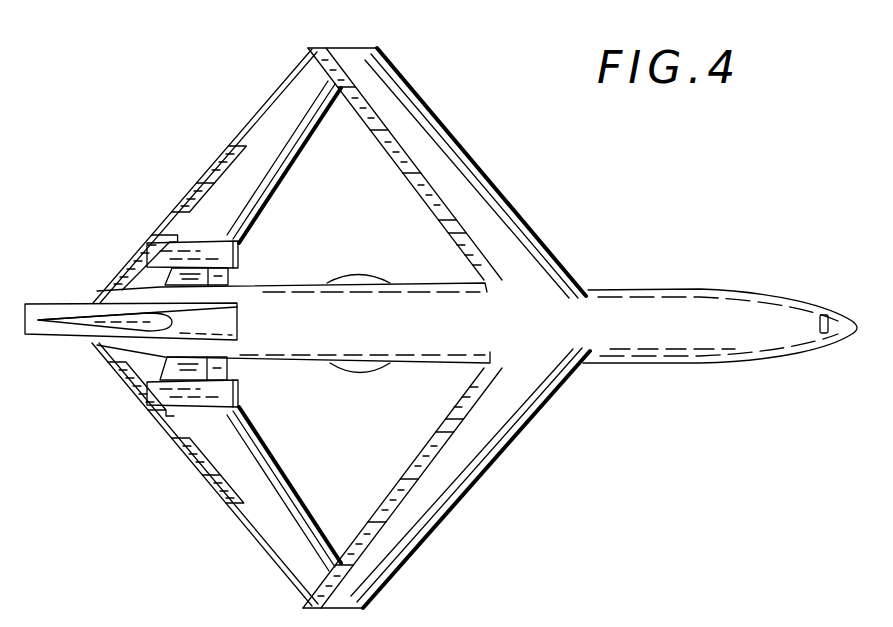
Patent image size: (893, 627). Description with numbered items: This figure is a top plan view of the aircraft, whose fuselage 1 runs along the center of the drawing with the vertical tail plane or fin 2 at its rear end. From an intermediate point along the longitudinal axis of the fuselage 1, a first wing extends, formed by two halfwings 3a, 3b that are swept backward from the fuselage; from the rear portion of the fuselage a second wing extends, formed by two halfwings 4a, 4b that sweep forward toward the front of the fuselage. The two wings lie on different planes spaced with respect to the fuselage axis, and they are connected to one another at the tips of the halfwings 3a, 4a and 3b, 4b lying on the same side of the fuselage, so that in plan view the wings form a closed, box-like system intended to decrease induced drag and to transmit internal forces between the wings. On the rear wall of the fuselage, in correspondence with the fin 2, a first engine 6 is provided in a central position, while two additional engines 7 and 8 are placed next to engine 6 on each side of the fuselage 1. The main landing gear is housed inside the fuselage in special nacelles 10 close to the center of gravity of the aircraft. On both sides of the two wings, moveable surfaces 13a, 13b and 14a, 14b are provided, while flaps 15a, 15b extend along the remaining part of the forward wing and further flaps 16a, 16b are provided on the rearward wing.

The fuselage 1 is at (690, 318).
The vertical tail plane or fin 2 is at (83, 324).
The halfwing 3a is at (413, 528).
The halfwing 3b is at (487, 202).
The halfwing 4a is at (273, 525).
The halfwing 4b is at (257, 122).
The first engine 6 is at (183, 316).
The additional engine 7 is at (237, 394).
The additional engine 8 is at (236, 256).
The nacelles 10 is at (357, 276).
The moveable surface 13a is at (495, 377).
The moveable surface 13b is at (493, 263).
The moveable surface 14a is at (124, 383).
The moveable surface 14b is at (128, 255).
The flap 15a is at (428, 438).
The flap 15b is at (335, 90).
The flap 16a is at (210, 483).
The flap 16b is at (227, 153).